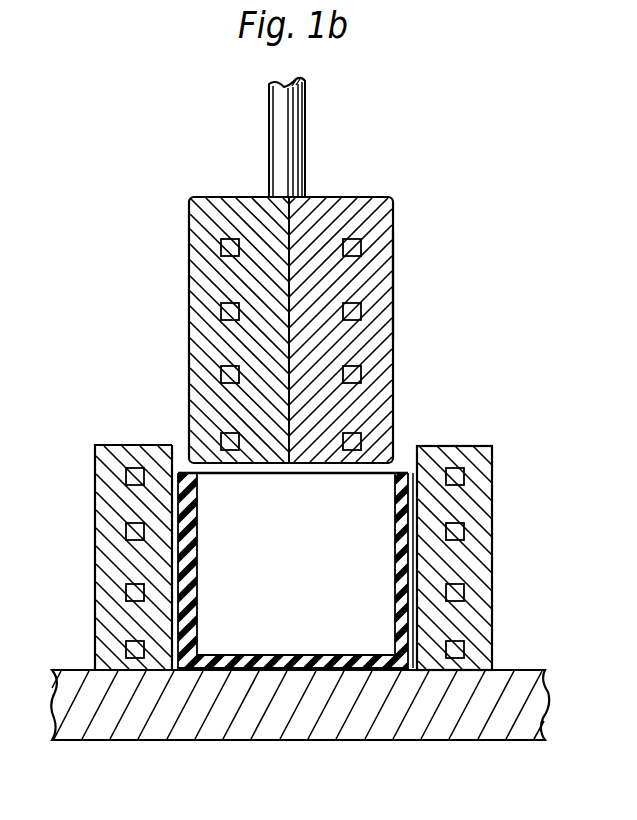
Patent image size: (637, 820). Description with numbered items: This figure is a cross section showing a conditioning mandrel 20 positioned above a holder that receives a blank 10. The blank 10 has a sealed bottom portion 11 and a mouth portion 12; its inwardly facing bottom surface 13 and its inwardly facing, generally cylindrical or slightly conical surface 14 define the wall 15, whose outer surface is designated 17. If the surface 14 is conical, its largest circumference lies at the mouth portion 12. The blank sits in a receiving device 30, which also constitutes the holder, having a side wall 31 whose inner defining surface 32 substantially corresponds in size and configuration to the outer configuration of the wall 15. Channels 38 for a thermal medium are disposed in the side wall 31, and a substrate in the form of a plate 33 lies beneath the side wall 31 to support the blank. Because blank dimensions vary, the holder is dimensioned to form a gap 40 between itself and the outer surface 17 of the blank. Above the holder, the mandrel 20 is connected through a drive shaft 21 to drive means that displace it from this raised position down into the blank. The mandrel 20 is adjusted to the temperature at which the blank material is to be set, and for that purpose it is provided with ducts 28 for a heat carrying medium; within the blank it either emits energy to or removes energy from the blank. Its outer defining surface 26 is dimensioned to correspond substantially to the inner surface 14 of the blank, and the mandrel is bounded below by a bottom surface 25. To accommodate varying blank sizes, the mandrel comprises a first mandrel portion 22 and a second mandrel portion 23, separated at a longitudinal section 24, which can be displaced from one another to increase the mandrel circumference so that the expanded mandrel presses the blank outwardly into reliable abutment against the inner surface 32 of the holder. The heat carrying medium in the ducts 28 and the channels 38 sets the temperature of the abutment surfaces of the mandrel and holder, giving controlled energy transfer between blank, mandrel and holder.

The blank 10 is at (354, 542).
The sealed bottom portion 11 is at (242, 665).
The mouth portion 12 is at (417, 495).
The inwardly facing bottom surface 13 is at (298, 658).
The inwardly facing defining surface 14 is at (393, 546).
The wall 15 is at (405, 556).
The outer surface of the wall 17 is at (410, 606).
The mandrel 20 is at (313, 353).
The drive shaft 21 is at (281, 157).
The first mandrel portion 22 is at (226, 253).
The second mandrel portion 23 is at (368, 352).
The longitudinal section 24 is at (292, 277).
The bottom surface 25 is at (283, 463).
The outer defining surface 26 is at (393, 283).
The ducts 28 is at (228, 375).
The receiving device 30 is at (105, 518).
The side wall 31 is at (120, 556).
The inner defining surface 32 is at (193, 486).
The plate 33 is at (220, 716).
The channels 38 is at (126, 522).
The gap 40 is at (174, 462).